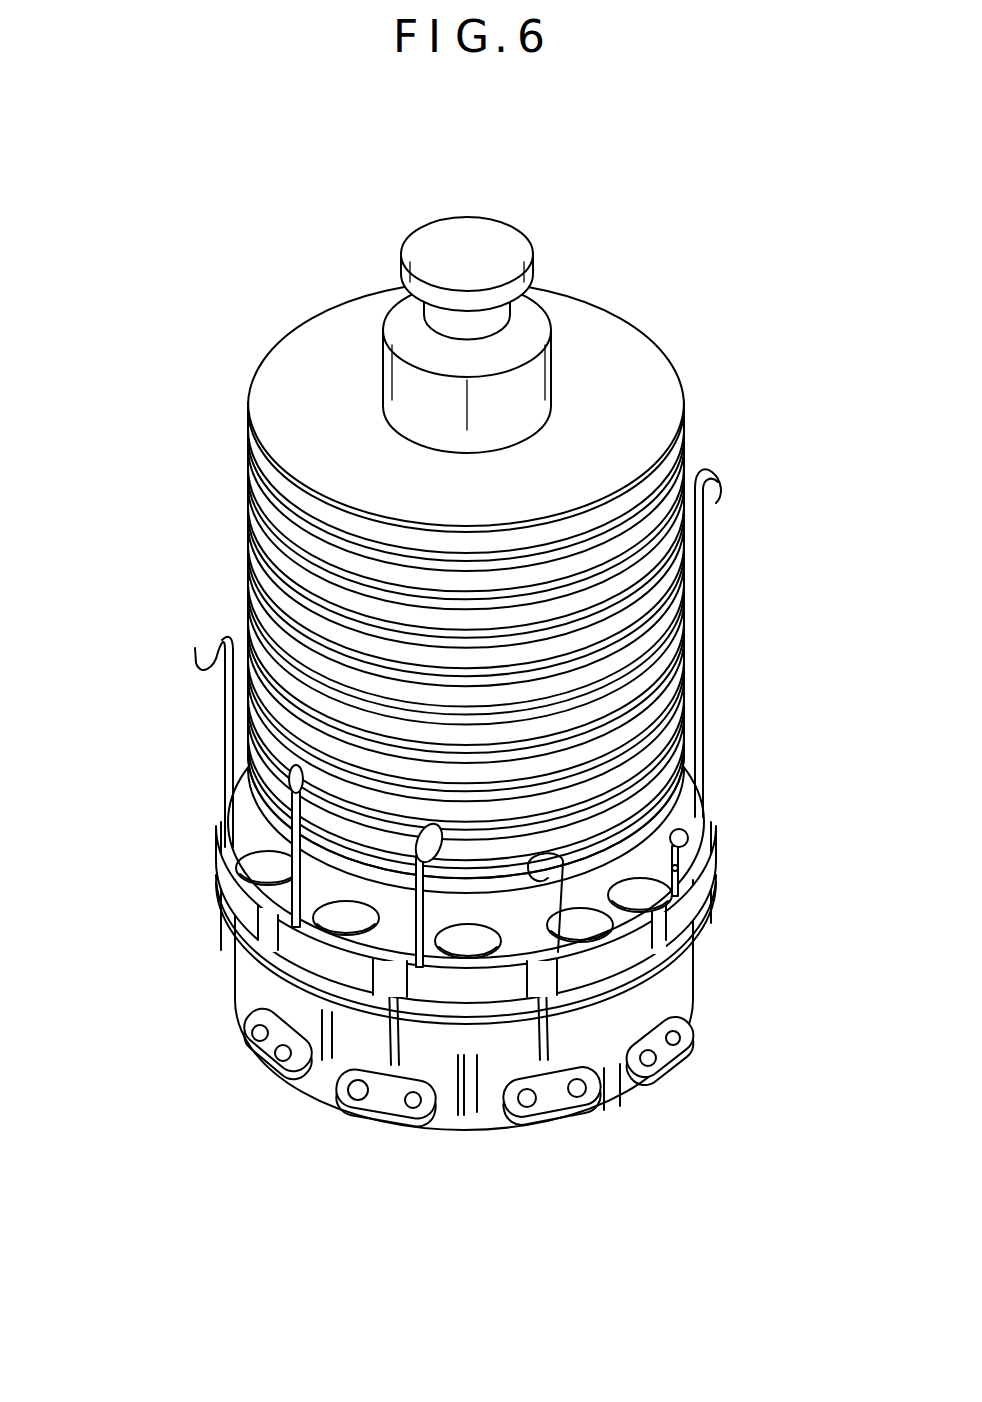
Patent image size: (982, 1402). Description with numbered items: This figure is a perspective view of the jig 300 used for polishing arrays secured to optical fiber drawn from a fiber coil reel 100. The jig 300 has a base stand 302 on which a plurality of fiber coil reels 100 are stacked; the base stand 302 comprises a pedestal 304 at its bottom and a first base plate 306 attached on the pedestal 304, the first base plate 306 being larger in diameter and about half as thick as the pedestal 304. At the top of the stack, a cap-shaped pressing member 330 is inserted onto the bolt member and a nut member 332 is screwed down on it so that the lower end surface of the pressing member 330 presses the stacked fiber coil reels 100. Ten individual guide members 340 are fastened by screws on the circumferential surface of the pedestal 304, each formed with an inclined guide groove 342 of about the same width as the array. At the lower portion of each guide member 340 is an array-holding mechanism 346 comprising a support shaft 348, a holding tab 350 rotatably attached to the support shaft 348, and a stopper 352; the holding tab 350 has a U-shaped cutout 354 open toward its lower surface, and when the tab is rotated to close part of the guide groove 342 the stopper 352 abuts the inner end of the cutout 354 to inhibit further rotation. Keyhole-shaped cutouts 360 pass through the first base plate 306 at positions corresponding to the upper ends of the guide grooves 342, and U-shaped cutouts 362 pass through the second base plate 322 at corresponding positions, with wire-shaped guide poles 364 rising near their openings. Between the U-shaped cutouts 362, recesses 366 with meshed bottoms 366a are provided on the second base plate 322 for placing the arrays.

The jig 300 is at (280, 214).
The fiber coil reel 100 is at (660, 385).
The base stand 302 is at (519, 1109).
The pedestal 304 is at (478, 1117).
The first base plate 306 is at (250, 1043).
The second base plate 322 is at (218, 893).
The pressing member 330 is at (540, 376).
The nut member 332 is at (500, 233).
The guide member 340 is at (297, 1080).
The guide groove 342 is at (395, 1100).
The array-holding mechanism 346 is at (670, 1070).
The support shaft 348 is at (530, 1107).
The holding tab 350 is at (343, 1175).
The stopper 352 is at (592, 1181).
The U-shaped cutout 354 is at (575, 1103).
The keyhole-shaped cutout 360 is at (343, 1097).
The U-shaped cutout 362 is at (245, 955).
The guide pole 364 is at (225, 748).
The recess 366 is at (698, 863).
The meshed bottom 366a is at (710, 923).